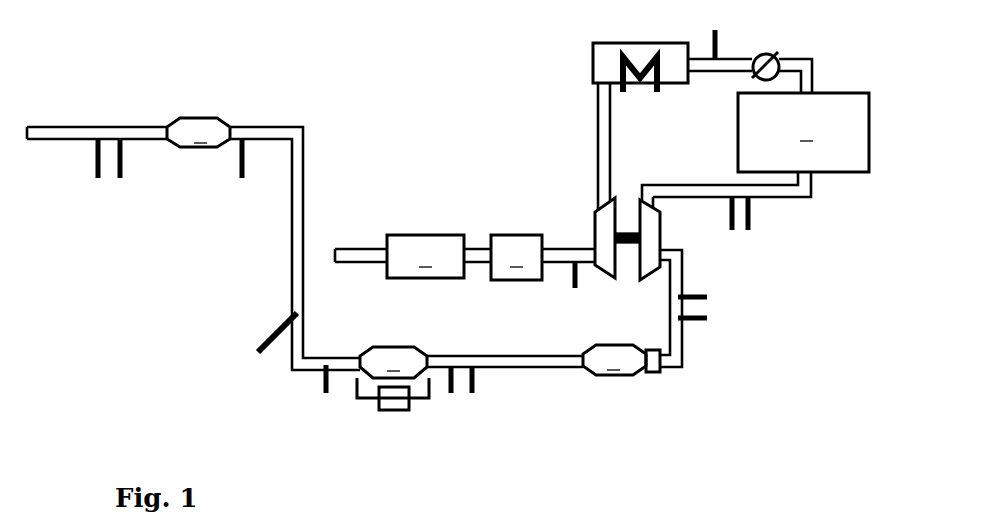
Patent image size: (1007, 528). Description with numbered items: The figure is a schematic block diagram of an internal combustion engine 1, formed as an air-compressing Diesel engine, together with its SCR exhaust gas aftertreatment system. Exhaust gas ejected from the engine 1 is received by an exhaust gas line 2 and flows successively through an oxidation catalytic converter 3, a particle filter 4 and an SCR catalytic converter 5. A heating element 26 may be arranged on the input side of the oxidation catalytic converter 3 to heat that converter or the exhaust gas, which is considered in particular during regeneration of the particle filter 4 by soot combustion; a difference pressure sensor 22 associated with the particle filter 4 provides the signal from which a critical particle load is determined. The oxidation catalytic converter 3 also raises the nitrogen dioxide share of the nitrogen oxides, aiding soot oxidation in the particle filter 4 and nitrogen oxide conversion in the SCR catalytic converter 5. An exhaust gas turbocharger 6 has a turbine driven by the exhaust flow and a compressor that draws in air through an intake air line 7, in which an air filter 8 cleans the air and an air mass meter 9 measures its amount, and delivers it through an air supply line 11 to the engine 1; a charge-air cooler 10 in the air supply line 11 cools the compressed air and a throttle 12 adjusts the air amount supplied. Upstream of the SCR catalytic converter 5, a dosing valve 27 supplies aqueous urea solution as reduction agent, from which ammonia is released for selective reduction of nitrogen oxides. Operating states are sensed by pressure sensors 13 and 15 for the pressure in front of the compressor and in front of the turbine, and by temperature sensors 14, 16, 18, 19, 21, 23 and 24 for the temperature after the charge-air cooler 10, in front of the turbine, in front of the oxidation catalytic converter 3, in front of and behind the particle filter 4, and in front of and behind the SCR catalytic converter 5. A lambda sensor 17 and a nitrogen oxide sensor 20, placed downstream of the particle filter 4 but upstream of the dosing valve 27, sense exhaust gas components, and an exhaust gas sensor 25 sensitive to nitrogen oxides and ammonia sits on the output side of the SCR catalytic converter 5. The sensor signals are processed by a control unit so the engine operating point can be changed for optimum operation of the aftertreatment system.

The internal combustion engine 1 is at (803, 132).
The exhaust gas line 2 is at (298, 295).
The oxidation catalytic converter 3 is at (614, 360).
The particle filter 4 is at (393, 372).
The SCR catalytic converter 5 is at (198, 132).
The exhaust gas turbocharger 6 is at (568, 200).
The intake air line 7 is at (366, 246).
The air filter 8 is at (425, 256).
The air mass meter 9 is at (516, 257).
The charge-air cooler 10 is at (606, 60).
The air supply line 11 is at (600, 118).
The throttle 12 is at (766, 52).
The pressure sensor 13 is at (572, 290).
The temperature sensor 14 is at (712, 30).
The pressure sensor 15 is at (730, 230).
The temperature sensor 16 is at (750, 226).
The lambda sensor 17 is at (708, 297).
The temperature sensor 18 is at (700, 320).
The temperature sensor 19 is at (475, 390).
The nitrogen oxide sensor 20 is at (452, 394).
The temperature sensor 21 is at (322, 388).
The difference pressure sensor 22 is at (402, 411).
The temperature sensor 23 is at (244, 178).
The temperature sensor 24 is at (122, 175).
The exhaust gas sensor 25 is at (98, 180).
The heating element 26 is at (656, 376).
The dosing valve 27 is at (258, 350).